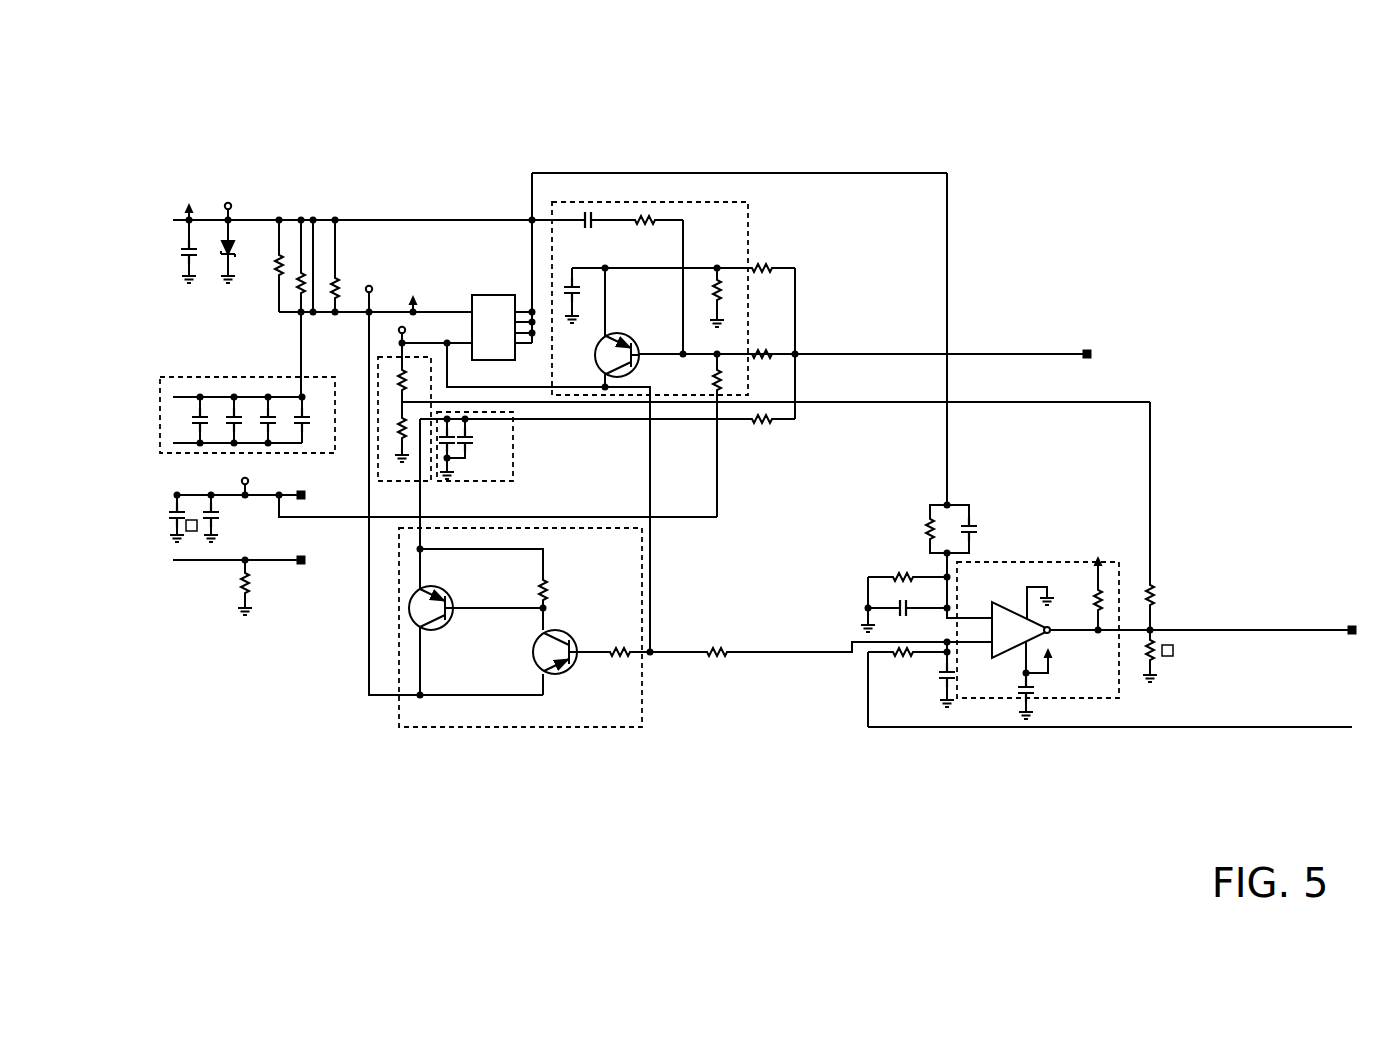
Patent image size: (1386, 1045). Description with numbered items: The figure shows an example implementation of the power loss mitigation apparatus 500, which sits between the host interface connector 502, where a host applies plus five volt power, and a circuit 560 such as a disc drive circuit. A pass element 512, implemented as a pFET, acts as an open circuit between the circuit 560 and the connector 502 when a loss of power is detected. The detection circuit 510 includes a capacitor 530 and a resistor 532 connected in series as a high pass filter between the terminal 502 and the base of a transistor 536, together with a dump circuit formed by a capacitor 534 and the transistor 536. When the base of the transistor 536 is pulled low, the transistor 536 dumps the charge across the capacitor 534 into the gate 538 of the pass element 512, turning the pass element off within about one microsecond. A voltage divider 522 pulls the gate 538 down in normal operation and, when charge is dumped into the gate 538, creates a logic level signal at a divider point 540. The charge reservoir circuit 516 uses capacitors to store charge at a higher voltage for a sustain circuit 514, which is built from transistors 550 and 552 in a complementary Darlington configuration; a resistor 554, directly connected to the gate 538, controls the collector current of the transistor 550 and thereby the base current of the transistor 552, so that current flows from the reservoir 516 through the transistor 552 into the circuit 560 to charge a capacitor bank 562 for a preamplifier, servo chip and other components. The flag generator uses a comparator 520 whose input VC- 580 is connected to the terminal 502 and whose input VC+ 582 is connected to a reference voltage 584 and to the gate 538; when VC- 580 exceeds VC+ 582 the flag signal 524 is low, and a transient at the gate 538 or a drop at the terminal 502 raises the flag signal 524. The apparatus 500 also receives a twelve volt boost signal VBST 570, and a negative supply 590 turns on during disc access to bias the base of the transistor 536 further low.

The power loss mitigation apparatus 500 is at (312, 818).
The host interface connector 502 is at (278, 214).
The detection circuit 510 is at (698, 200).
The pass element 512 is at (490, 292).
The sustain circuit 514 is at (695, 623).
The charge reservoir circuit 516 is at (515, 447).
The comparator 520 is at (1008, 700).
The voltage divider 522 is at (390, 354).
The flag signal 524 is at (1203, 628).
The capacitor 530 is at (592, 208).
The resistor 532 is at (652, 208).
The capacitor 534 is at (567, 266).
The transistor 536 is at (641, 342).
The gate 538 is at (469, 340).
The divider point 540 is at (396, 400).
The transistor 550 is at (560, 677).
The transistor 552 is at (433, 633).
The resistor 554 is at (620, 658).
The circuit 560 is at (368, 640).
The capacitor bank 562 is at (240, 456).
The boost signal VBST 570 is at (1094, 348).
The input VC- 580 is at (990, 615).
The input VC+ 582 is at (990, 645).
The reference voltage 584 is at (1298, 729).
The negative supply 590 is at (297, 501).